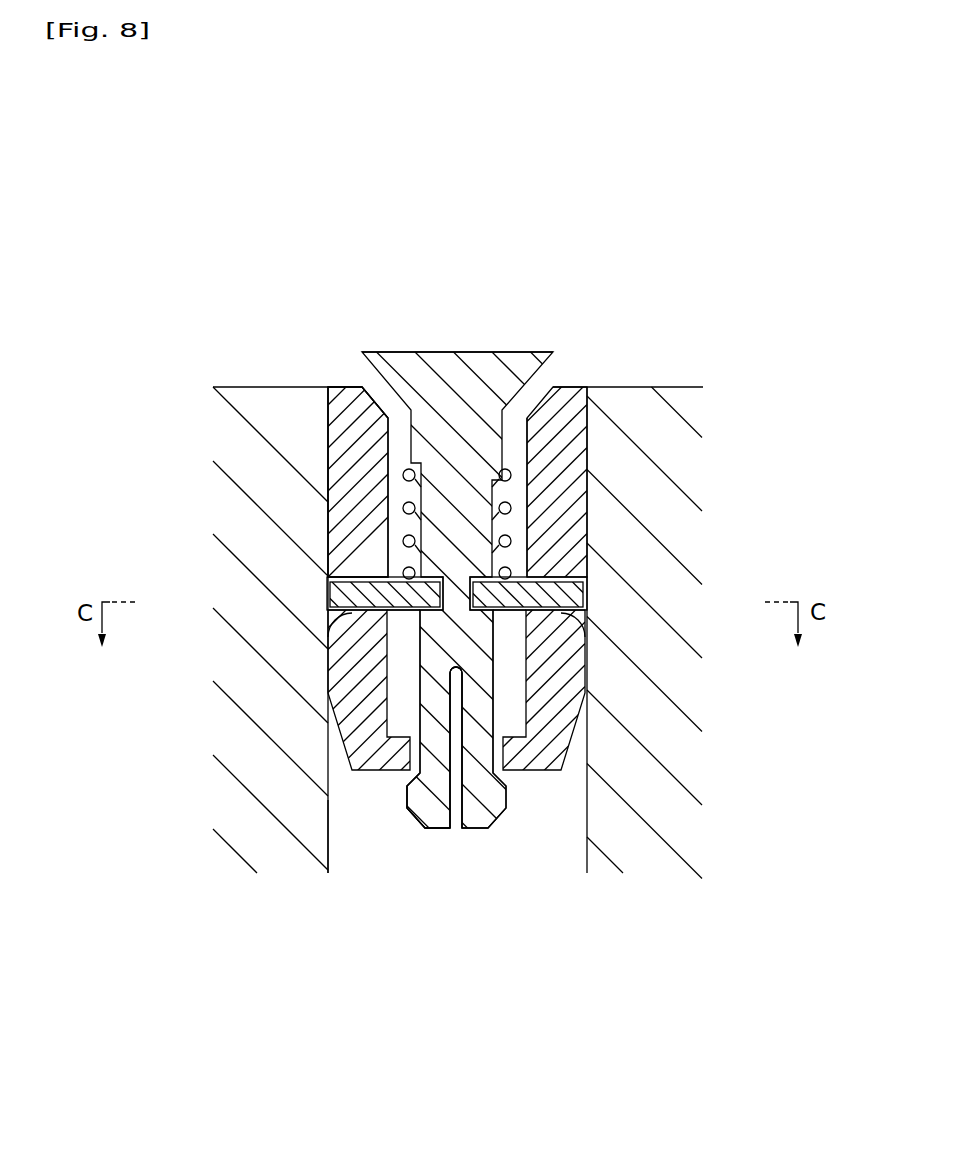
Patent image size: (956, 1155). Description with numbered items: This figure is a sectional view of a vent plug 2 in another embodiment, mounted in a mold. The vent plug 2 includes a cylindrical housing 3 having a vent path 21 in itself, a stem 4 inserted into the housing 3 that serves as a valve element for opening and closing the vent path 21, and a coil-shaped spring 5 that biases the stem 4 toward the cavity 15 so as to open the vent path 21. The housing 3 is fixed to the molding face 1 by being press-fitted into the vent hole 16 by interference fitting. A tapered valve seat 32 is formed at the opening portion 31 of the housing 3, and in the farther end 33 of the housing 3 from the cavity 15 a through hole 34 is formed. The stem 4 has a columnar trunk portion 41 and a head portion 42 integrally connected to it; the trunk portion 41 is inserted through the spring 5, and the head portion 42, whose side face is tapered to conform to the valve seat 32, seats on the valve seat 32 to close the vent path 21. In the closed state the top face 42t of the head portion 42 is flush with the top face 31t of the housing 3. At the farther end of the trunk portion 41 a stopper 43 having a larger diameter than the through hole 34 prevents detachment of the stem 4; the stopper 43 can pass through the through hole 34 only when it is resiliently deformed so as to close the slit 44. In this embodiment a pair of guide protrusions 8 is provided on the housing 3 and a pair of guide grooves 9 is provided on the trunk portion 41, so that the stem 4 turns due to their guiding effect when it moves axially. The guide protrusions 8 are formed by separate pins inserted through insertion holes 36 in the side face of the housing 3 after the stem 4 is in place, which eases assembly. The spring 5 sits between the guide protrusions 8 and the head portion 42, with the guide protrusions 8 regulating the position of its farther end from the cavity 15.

The molding face 1 is at (242, 387).
The vent plug 2 is at (552, 318).
The housing 3 is at (353, 477).
The stem 4 is at (500, 442).
The spring 5 is at (510, 527).
The guide protrusions 8 is at (393, 578).
The guide grooves 9 is at (387, 610).
The cavity 15 is at (455, 193).
The vent hole 16 is at (358, 853).
The vent path 21 is at (522, 453).
The opening portion 31 is at (337, 405).
The top face of the housing 31t is at (345, 387).
The valve seat 32 is at (543, 397).
The farther end 33 is at (357, 750).
The through hole 34 is at (499, 752).
The insertion holes 36 is at (328, 630).
The trunk portion 41 is at (437, 670).
The head portion 42 is at (430, 385).
The top face of the head portion 42t is at (502, 352).
The stopper 43 is at (435, 830).
The slit 44 is at (457, 826).